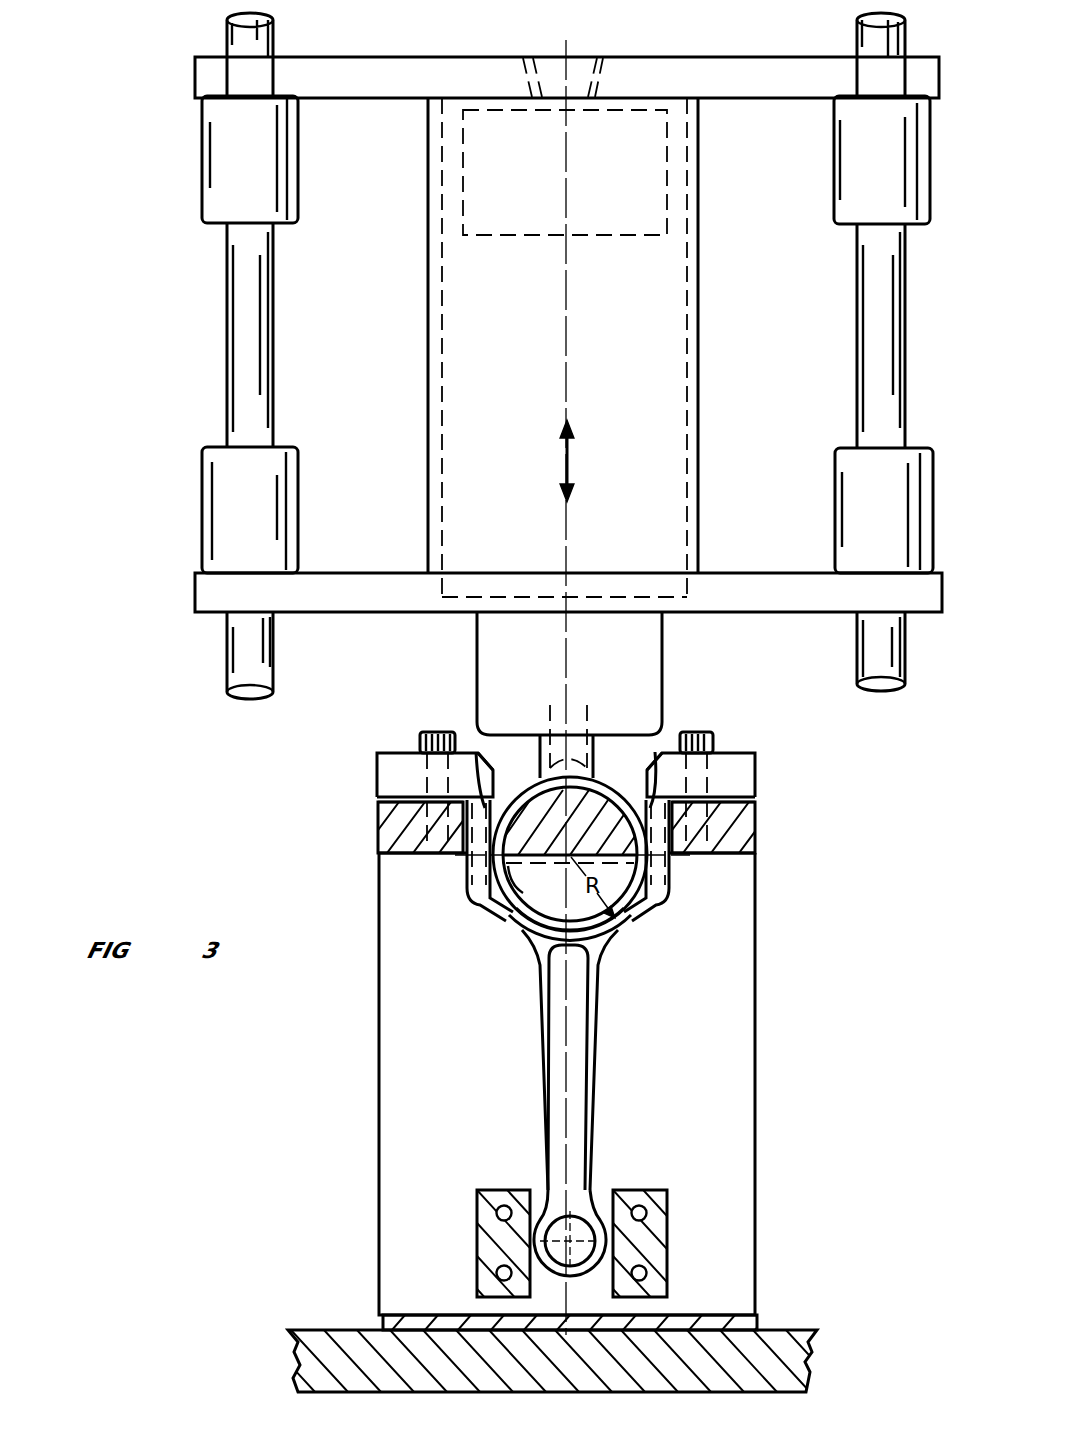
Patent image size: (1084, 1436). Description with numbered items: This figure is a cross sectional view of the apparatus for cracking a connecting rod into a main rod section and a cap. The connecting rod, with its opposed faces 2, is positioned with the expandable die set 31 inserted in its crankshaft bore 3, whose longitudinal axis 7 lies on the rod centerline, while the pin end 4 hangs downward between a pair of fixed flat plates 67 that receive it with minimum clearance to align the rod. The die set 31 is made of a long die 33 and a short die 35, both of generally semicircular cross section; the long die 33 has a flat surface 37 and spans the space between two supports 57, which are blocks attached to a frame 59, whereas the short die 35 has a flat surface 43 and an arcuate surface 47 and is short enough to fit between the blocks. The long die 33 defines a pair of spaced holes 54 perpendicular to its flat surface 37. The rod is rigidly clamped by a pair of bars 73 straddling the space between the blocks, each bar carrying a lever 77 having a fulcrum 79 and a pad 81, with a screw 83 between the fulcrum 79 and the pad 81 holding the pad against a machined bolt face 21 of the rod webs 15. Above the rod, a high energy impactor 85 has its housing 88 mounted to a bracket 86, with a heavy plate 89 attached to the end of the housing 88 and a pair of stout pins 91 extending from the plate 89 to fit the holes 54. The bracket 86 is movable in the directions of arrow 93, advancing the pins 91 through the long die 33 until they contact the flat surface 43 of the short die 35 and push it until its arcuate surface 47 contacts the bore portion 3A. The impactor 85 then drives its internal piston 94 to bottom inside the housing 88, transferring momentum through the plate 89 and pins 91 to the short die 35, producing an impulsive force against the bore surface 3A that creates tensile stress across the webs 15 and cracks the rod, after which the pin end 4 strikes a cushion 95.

The opposed faces 2 is at (538, 968).
The crankshaft bore 3 is at (615, 945).
The crankshaft bore portion 3A is at (512, 930).
The pin end 4 is at (592, 1190).
The longitudinal axis of the crankshaft bore 7 is at (560, 873).
The webs 15 is at (468, 863).
The machined bolt faces 21 is at (645, 757).
The expandable die set 31 is at (476, 906).
The long die 33 is at (532, 778).
The short die 35 is at (500, 927).
The flat surface of the long die 37 is at (512, 873).
The flat surface of the short die 43 is at (655, 863).
The arcuate surface of the short die 47 is at (642, 916).
The holes 54 is at (590, 790).
The supports 57 is at (757, 985).
The frame 59 is at (352, 1345).
The fixed flat plates 67 is at (478, 1232).
The bars 73 is at (385, 826).
The lever 77 is at (380, 760).
The fulcrum 79 is at (752, 792).
The pad 81 is at (478, 745).
The screw 83 is at (425, 735).
The high energy impactor 85 is at (712, 303).
The bracket 86 is at (938, 600).
The housing 88 is at (690, 397).
The heavy plate 89 is at (662, 648).
The pins 91 is at (548, 705).
The arrow 93 is at (575, 448).
The internal piston 94 is at (668, 165).
The cushion 95 is at (737, 1322).